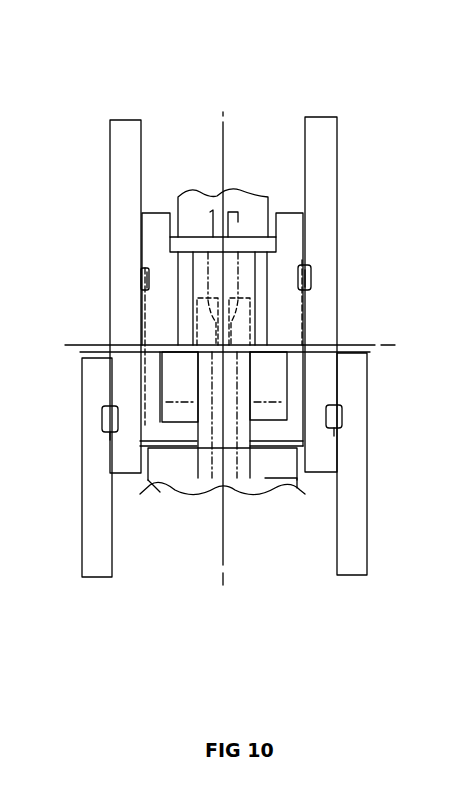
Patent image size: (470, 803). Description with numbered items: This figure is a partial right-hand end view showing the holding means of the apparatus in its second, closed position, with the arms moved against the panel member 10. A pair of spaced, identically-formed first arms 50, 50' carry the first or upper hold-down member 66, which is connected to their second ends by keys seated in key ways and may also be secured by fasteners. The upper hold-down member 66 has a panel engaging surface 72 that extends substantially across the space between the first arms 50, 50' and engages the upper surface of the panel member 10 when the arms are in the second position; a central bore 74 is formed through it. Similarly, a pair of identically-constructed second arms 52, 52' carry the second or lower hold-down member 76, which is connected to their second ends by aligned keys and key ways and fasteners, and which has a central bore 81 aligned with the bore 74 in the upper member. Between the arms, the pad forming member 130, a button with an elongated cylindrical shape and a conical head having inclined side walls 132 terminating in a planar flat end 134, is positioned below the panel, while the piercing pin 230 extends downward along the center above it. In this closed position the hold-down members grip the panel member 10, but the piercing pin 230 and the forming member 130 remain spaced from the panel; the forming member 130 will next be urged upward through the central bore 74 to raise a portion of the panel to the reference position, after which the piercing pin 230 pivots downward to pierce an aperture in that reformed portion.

The panel member 10 is at (125, 340).
The first arm 50 is at (107, 269).
The first arm 50' is at (333, 264).
The second arm 52 is at (82, 498).
The second arm 52' is at (343, 500).
The first hold-down member 66 is at (287, 262).
The panel engaging surface 72 is at (196, 351).
The central bore 74 is at (252, 292).
The second hold-down member 76 is at (318, 458).
The central bore 81 is at (289, 489).
The forming member 130 is at (178, 460).
The inclined side walls 132 is at (200, 355).
The planar flat end 134 is at (235, 357).
The piercing pin 230 is at (218, 222).